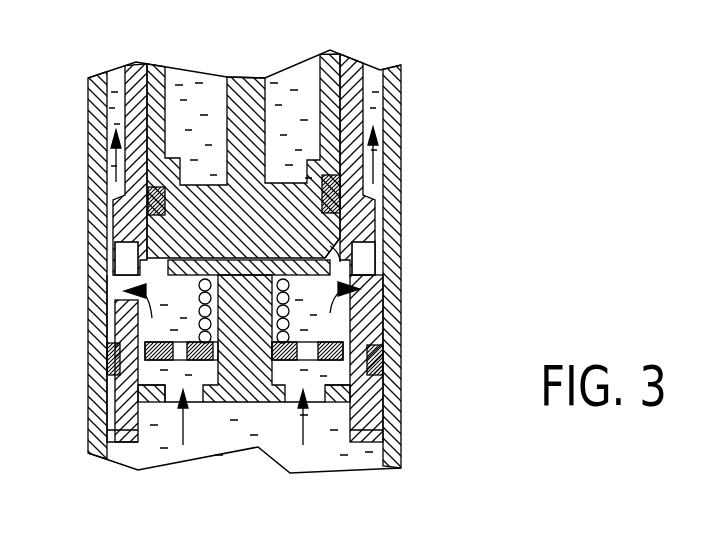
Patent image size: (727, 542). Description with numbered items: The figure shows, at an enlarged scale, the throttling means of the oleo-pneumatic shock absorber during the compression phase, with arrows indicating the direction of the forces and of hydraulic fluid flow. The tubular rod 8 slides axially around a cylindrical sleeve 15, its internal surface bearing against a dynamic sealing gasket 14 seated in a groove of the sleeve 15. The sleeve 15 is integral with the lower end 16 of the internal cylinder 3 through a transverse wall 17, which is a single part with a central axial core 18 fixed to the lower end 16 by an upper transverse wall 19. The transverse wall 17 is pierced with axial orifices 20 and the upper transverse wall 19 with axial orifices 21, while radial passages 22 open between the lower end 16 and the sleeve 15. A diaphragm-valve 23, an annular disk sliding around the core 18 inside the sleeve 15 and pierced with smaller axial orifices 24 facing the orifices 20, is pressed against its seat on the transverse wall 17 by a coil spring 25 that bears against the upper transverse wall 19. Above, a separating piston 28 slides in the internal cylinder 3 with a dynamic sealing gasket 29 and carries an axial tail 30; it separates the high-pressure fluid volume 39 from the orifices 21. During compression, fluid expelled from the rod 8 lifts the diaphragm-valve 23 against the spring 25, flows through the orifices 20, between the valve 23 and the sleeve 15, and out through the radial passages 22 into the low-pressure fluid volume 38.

The internal cylinder 3 is at (352, 80).
The rod 8 is at (390, 395).
The dynamic sealing gasket 14 is at (378, 350).
The cylindrical sleeve 15 is at (368, 430).
The lower end of the internal cylinder 16 is at (130, 248).
The transverse wall 17 is at (340, 398).
The central core 18 is at (237, 405).
The upper transverse wall 19 is at (352, 262).
The axial orifices 20 is at (180, 404).
The axial orifices 21 is at (120, 256).
The radial passages 22 is at (118, 296).
The diaphragm-valve 23 is at (128, 403).
The axial orifices 24 is at (112, 420).
The coil spring 25 is at (195, 318).
The separating piston 28 is at (213, 212).
The dynamic sealing gasket 29 is at (148, 202).
The axial tail 30 is at (234, 78).
The volume of hydraulic fluid 38 is at (382, 200).
The volume of hydraulic fluid 39 is at (296, 98).